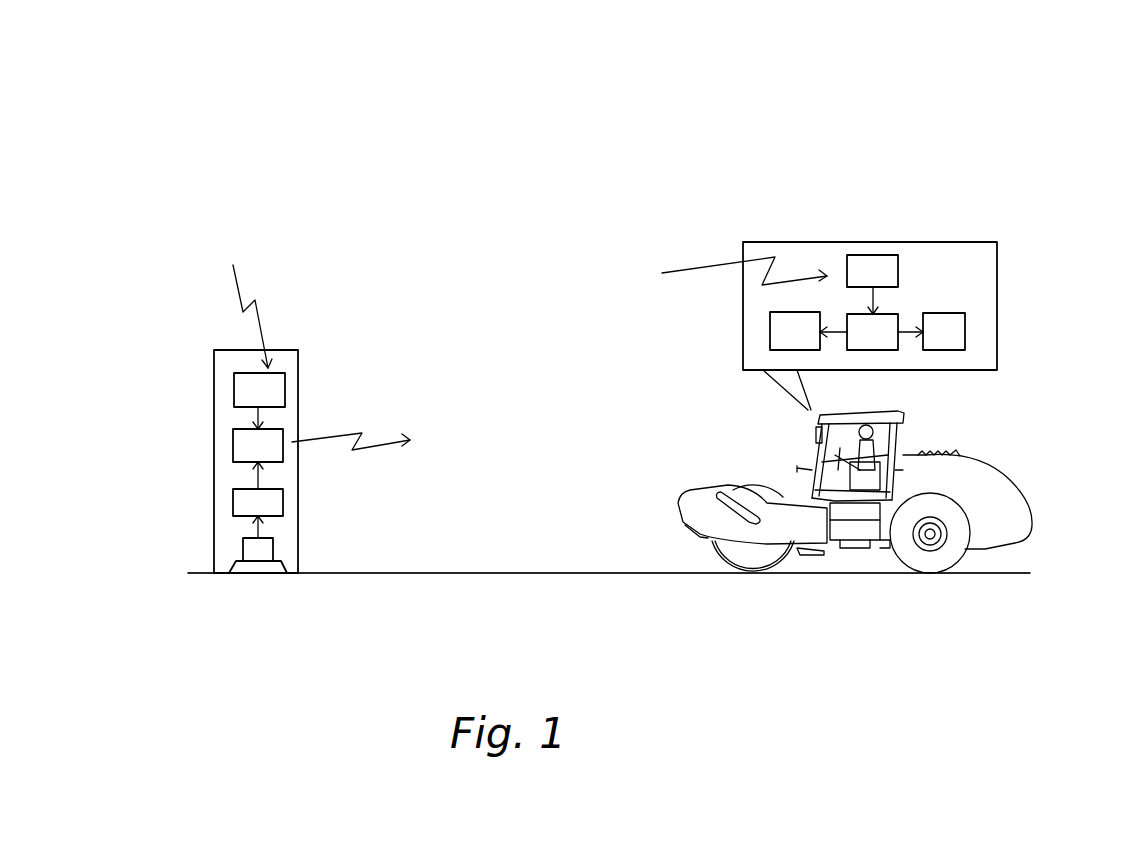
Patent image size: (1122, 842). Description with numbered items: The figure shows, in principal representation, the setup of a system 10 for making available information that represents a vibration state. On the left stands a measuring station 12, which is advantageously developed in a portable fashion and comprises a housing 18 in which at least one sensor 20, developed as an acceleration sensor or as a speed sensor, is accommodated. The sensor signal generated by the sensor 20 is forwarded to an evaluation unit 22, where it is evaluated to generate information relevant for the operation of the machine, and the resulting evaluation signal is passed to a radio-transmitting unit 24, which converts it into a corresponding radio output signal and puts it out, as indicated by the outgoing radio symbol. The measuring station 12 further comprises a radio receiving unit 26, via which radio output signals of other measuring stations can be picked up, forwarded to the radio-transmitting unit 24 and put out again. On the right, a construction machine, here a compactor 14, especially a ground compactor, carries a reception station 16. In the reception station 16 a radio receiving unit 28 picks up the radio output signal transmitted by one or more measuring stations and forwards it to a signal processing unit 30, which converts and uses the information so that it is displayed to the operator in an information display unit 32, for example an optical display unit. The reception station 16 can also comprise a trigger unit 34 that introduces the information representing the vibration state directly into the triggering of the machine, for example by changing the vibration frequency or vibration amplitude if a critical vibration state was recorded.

The system 10 is at (763, 130).
The measuring station 12 is at (210, 385).
The compactor 14 is at (980, 470).
The reception station 16 is at (903, 242).
The housing 18 is at (212, 503).
The sensor 20 is at (275, 547).
The evaluation unit 22 is at (233, 517).
The radio-transmitting unit 24 is at (233, 447).
The radio receiving unit 26 is at (233, 372).
The radio receiving unit 28 is at (848, 255).
The signal processing unit 30 is at (897, 315).
The information display unit 32 is at (965, 313).
The trigger unit 34 is at (770, 328).